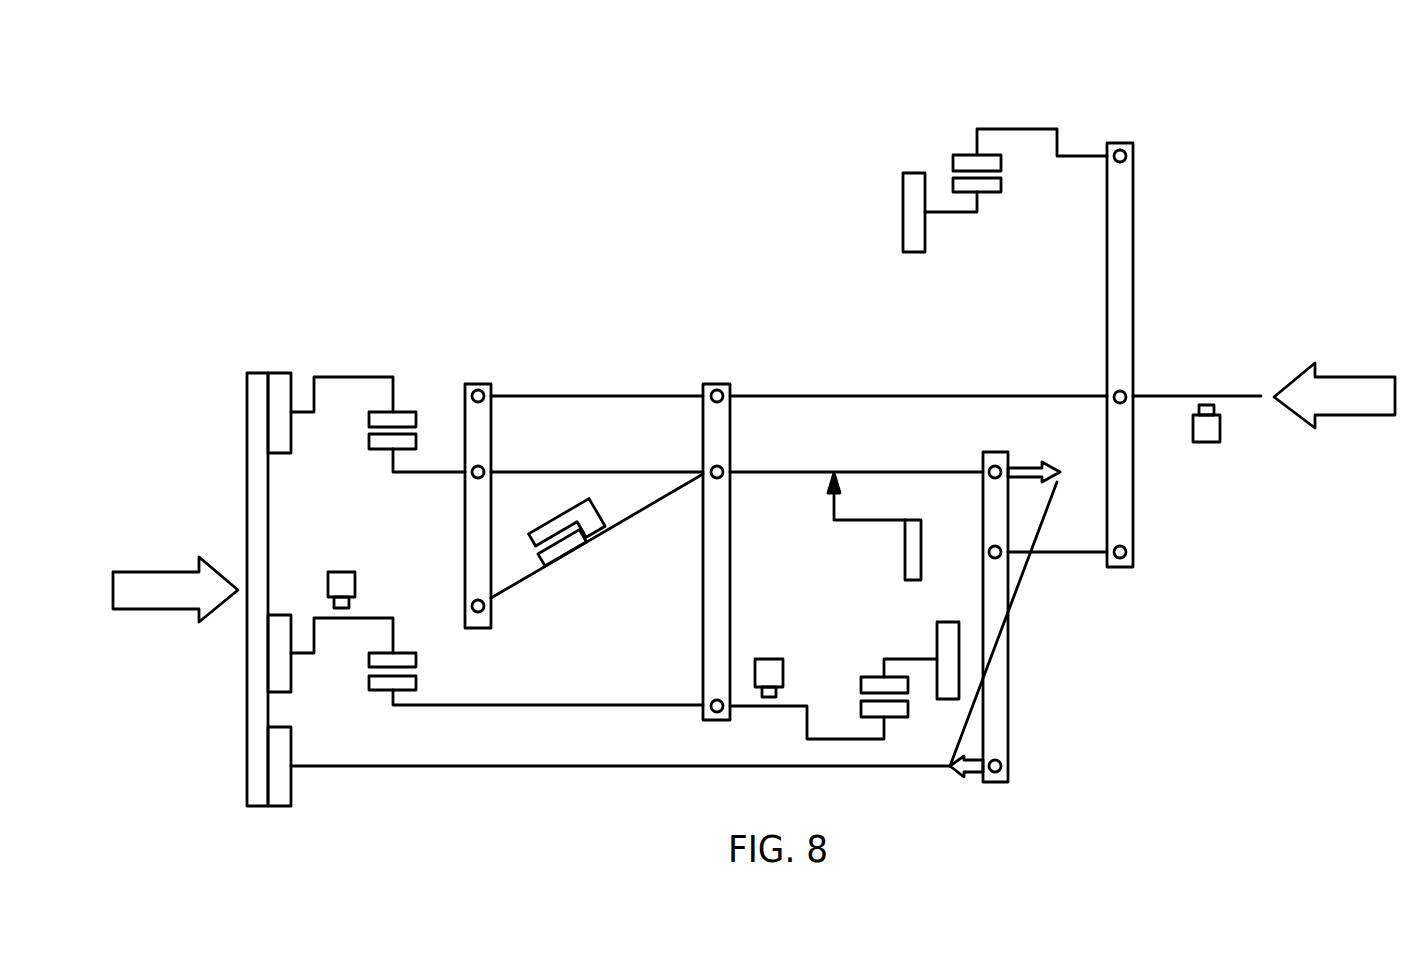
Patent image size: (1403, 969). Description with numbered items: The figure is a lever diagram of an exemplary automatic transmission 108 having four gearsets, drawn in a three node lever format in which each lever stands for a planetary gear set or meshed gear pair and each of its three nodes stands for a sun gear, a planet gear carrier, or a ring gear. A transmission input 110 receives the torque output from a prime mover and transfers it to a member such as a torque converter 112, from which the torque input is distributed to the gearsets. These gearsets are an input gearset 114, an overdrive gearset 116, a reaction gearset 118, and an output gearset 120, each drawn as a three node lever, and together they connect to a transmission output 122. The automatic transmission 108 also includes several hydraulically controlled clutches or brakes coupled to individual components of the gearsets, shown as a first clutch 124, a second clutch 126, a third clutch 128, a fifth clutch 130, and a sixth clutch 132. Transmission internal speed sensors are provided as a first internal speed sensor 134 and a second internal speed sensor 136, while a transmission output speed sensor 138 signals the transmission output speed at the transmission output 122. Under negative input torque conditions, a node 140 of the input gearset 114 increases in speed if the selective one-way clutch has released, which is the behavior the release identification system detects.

The automatic transmission 108 is at (1243, 138).
The transmission input 110 is at (128, 569).
The torque converter 112 is at (256, 706).
The input gearset 114 is at (993, 587).
The overdrive gearset 116 is at (477, 528).
The reaction gearset 118 is at (717, 583).
The output gearset 120 is at (1133, 243).
The transmission output 122 is at (1348, 375).
The first clutch 124 is at (378, 450).
The second clutch 126 is at (420, 676).
The third clutch 128 is at (589, 545).
The fifth clutch 130 is at (873, 685).
The sixth clutch 132 is at (988, 193).
The first internal speed sensor 134 is at (335, 572).
The second internal speed sensor 136 is at (762, 659).
The transmission output speed sensor 138 is at (1208, 433).
The node 140 is at (995, 472).